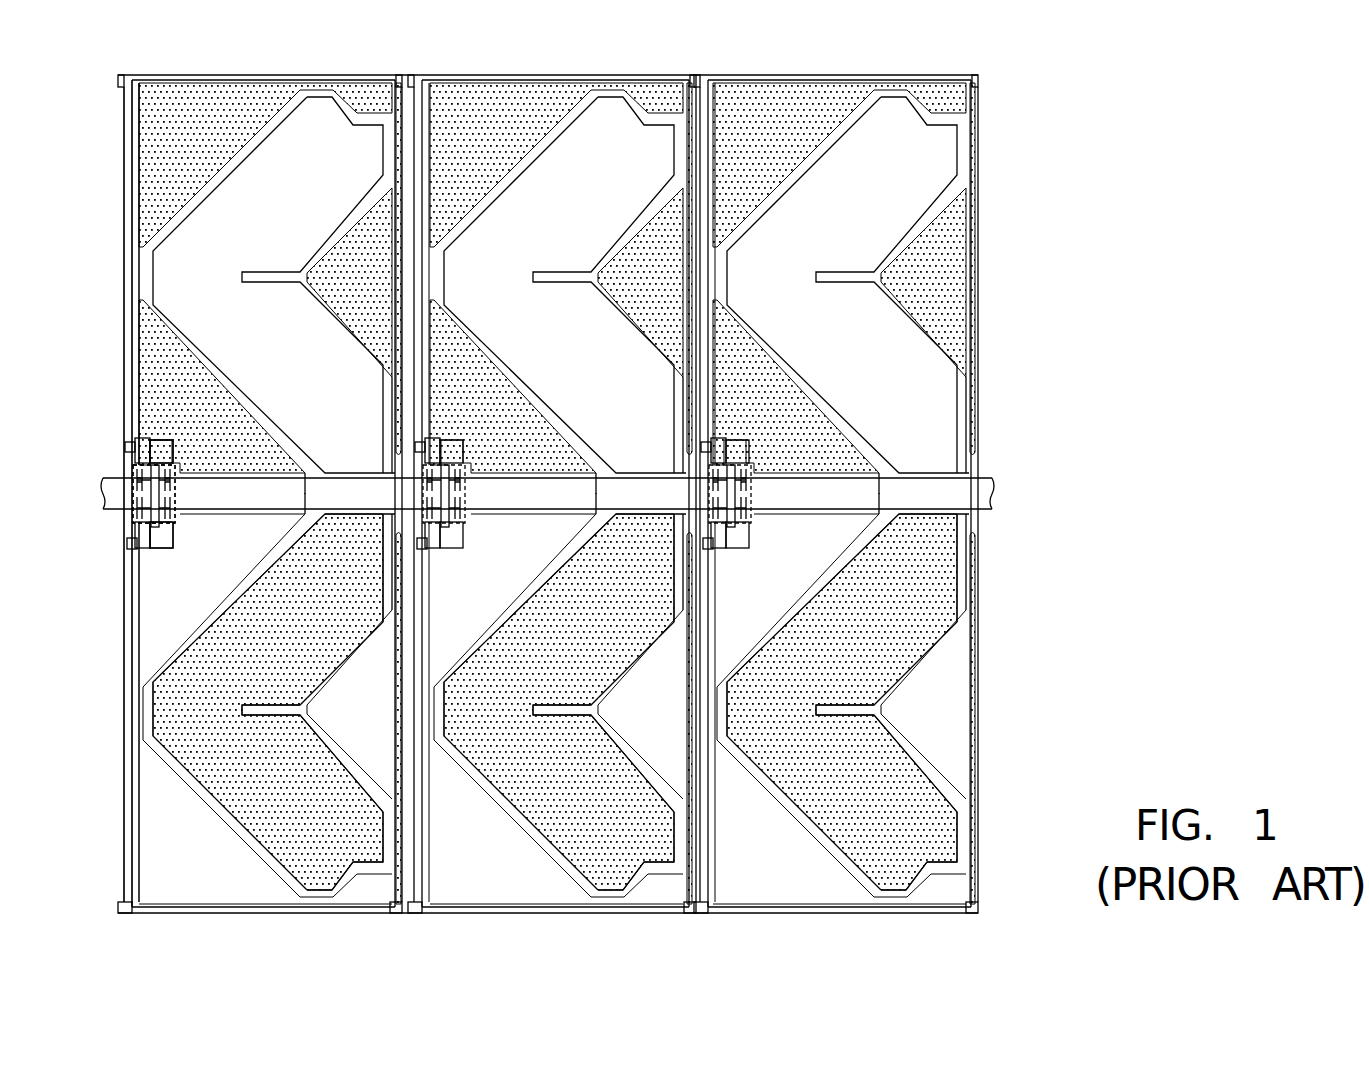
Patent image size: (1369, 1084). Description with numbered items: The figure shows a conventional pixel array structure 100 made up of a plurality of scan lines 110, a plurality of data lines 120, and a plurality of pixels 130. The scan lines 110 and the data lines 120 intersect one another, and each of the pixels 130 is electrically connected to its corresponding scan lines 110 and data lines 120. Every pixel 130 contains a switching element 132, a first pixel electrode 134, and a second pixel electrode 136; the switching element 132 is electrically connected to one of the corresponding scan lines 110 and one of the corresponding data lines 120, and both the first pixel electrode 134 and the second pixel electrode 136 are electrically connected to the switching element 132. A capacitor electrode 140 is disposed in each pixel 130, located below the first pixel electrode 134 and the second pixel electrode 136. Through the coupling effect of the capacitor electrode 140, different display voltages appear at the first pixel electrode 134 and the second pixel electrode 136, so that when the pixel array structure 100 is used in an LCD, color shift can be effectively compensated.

The pixel array structure 100 is at (1074, 907).
The scan lines 110 is at (242, 500).
The data lines 120 is at (128, 207).
The pixels 130 is at (379, 472).
The switching element 132 is at (126, 473).
The first pixel electrode 134 is at (150, 405).
The second pixel electrode 136 is at (150, 568).
The capacitor electrode 140 is at (140, 127).